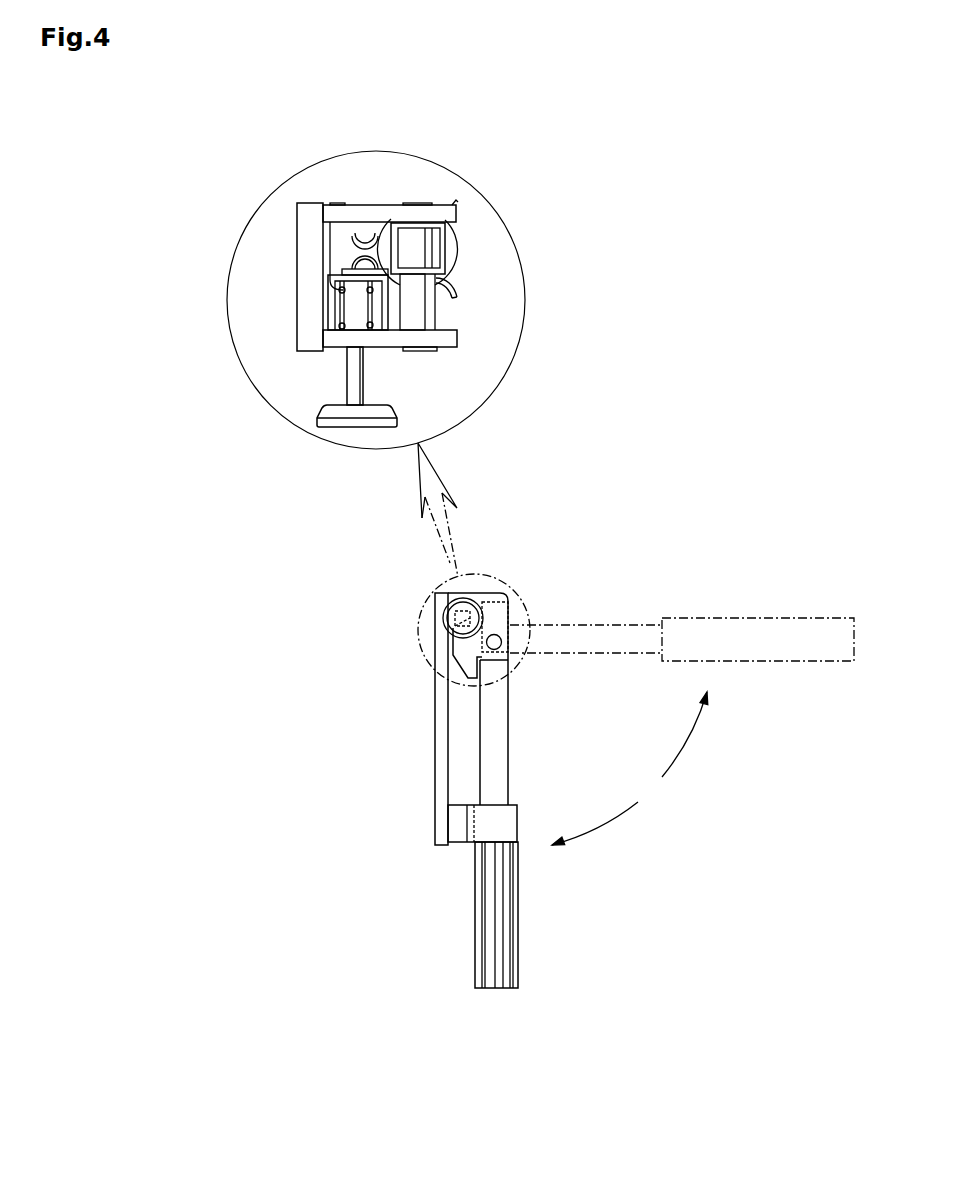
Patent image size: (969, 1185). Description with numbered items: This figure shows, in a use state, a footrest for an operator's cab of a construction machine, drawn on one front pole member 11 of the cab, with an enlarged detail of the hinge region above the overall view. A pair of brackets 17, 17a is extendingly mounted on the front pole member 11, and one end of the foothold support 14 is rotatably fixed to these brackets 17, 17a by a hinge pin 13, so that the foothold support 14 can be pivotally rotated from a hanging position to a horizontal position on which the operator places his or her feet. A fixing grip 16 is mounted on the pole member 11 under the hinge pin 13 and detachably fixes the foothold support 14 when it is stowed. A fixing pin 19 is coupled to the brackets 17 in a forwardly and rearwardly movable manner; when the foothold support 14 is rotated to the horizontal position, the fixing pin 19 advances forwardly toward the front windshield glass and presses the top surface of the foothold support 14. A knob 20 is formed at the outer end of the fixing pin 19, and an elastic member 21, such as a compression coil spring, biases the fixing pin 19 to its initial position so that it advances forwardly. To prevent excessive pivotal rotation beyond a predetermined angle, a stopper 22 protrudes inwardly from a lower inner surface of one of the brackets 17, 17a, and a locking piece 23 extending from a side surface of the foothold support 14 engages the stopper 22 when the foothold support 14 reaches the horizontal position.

The front pole member 11 is at (305, 283).
The hinge pin 13 is at (430, 307).
The foothold support 14 is at (453, 247).
The fixing grip 16 is at (342, 250).
The bracket 17 is at (387, 343).
The bracket 17a is at (372, 211).
The fixing pin 19 is at (352, 382).
The knob 20 is at (320, 423).
The elastic member 21 is at (342, 320).
The stopper 22 is at (487, 660).
The locking piece 23 is at (342, 272).